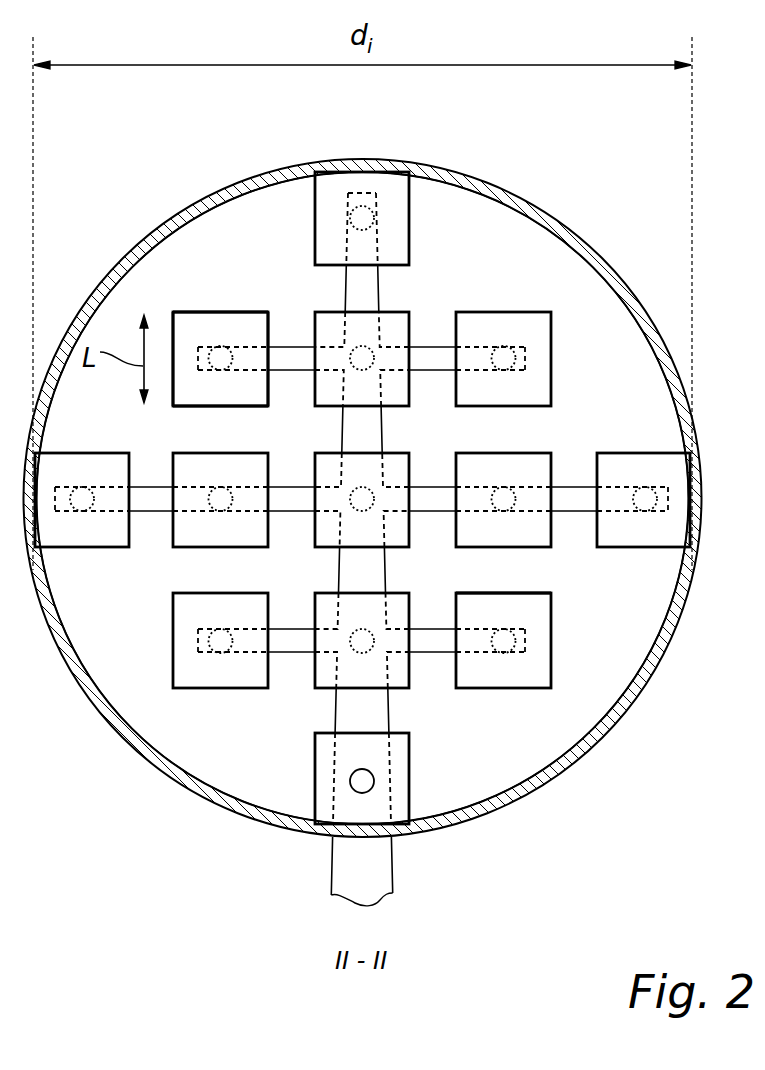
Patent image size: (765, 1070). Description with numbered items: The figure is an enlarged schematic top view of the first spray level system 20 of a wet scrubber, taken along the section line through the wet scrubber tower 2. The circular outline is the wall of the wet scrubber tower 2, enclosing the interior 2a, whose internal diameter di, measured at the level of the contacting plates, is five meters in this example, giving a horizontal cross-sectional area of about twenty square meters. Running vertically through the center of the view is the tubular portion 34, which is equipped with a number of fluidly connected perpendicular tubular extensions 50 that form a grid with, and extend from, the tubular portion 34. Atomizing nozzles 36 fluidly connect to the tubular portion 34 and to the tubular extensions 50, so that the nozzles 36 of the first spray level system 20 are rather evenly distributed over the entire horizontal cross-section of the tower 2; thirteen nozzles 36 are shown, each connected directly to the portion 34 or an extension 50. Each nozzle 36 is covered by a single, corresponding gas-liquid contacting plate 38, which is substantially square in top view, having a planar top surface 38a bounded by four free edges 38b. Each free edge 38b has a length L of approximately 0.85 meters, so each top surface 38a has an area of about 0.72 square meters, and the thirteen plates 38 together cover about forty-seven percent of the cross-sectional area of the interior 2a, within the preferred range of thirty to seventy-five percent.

The wet scrubber tower 2 is at (613, 273).
The interior of wet scrubber tower 2a is at (530, 228).
The first spray level system 20 is at (362, 501).
The tubular portion 34 is at (393, 862).
The atomizing nozzles 36 is at (367, 212).
The gas-liquid contacting plate 38 is at (551, 357).
The planar top surface 38a is at (235, 318).
The free edges 38b is at (175, 327).
The tubular extensions 50 is at (427, 346).